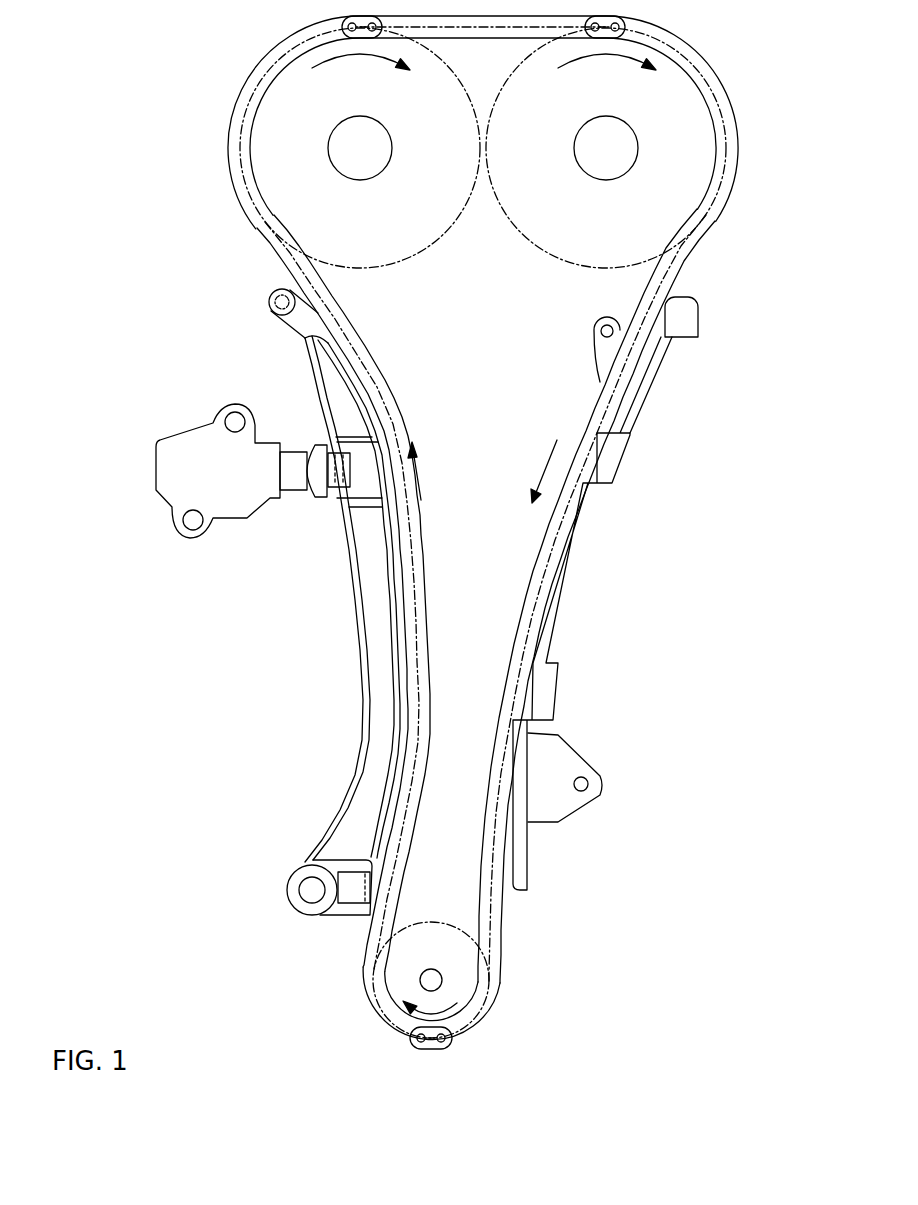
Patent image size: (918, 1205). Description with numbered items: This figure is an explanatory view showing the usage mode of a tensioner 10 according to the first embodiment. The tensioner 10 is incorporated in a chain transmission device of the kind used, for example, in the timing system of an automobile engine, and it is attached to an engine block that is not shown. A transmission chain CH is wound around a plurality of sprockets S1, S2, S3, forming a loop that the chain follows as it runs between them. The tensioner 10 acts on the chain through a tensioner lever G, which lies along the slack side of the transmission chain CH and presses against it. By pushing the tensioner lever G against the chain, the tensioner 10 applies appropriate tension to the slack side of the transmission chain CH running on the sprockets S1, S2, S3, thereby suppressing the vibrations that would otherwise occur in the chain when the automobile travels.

The tensioner 10 is at (200, 460).
The tensioner lever G is at (372, 782).
The transmission chain CH is at (677, 264).
The sprocket S1 is at (465, 980).
The sprocket S2 is at (282, 141).
The sprocket S3 is at (668, 135).